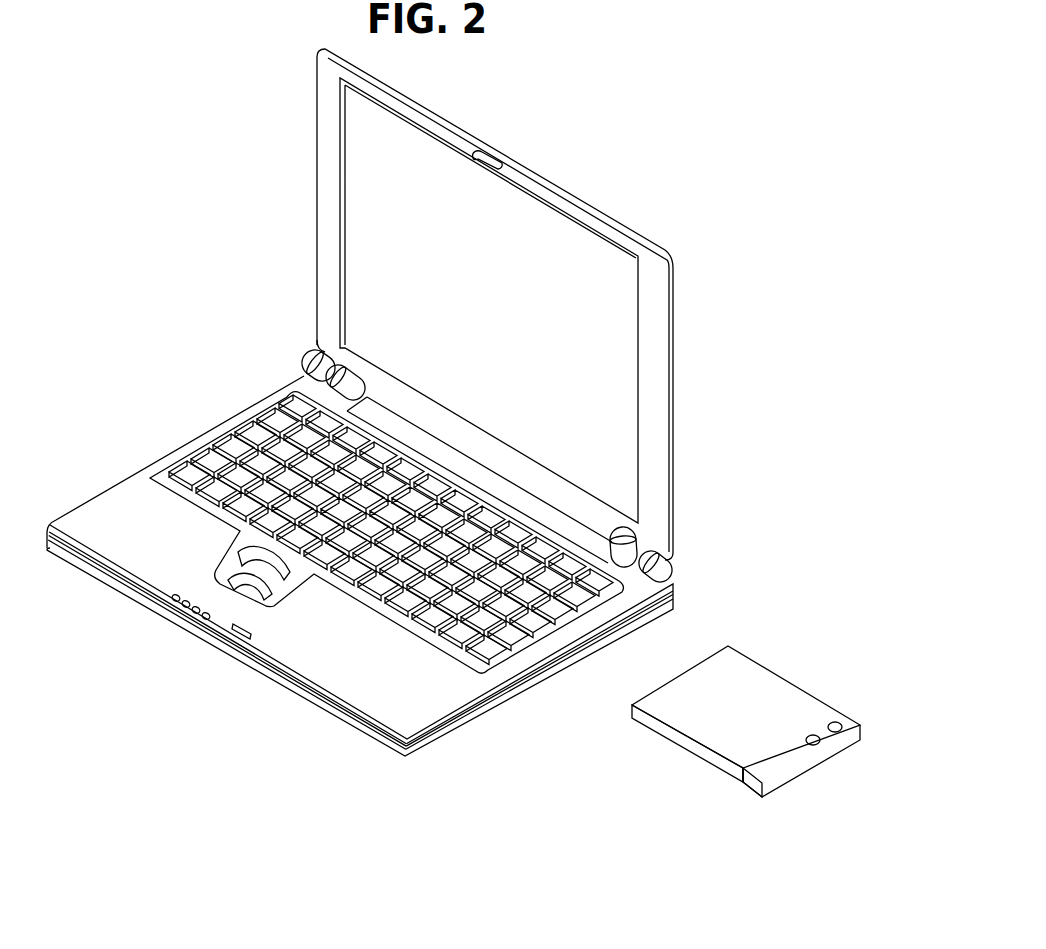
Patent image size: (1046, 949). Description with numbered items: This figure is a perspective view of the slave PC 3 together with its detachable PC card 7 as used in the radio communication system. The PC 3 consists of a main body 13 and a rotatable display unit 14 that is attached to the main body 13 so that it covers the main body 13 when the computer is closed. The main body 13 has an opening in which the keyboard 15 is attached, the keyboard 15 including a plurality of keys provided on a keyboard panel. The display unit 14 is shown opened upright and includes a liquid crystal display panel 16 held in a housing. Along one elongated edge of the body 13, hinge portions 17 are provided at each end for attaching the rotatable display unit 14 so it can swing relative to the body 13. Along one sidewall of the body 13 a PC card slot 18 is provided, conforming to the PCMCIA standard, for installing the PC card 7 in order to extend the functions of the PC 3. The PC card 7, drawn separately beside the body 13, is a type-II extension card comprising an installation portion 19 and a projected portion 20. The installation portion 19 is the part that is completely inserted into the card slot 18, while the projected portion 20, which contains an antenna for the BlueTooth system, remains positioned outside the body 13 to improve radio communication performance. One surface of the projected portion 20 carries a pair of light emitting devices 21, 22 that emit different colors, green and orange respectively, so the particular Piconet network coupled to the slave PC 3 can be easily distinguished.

The slave PC 3 is at (495, 304).
The PC card 7 is at (751, 718).
The main body 13 is at (108, 503).
The display unit 14 is at (330, 138).
The keyboard 15 is at (190, 442).
The liquid crystal display panel 16 is at (358, 223).
The hinge portions 17 is at (343, 370).
The PC card slot 18 is at (647, 603).
The installation portion 19 is at (648, 727).
The projected portion 20 is at (747, 788).
The light emitting device 21 is at (858, 730).
The light emitting device 22 is at (820, 742).